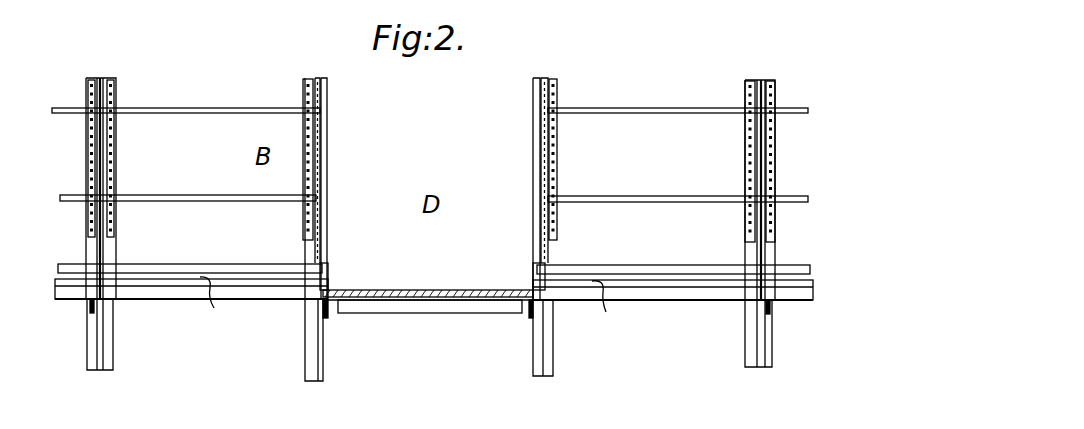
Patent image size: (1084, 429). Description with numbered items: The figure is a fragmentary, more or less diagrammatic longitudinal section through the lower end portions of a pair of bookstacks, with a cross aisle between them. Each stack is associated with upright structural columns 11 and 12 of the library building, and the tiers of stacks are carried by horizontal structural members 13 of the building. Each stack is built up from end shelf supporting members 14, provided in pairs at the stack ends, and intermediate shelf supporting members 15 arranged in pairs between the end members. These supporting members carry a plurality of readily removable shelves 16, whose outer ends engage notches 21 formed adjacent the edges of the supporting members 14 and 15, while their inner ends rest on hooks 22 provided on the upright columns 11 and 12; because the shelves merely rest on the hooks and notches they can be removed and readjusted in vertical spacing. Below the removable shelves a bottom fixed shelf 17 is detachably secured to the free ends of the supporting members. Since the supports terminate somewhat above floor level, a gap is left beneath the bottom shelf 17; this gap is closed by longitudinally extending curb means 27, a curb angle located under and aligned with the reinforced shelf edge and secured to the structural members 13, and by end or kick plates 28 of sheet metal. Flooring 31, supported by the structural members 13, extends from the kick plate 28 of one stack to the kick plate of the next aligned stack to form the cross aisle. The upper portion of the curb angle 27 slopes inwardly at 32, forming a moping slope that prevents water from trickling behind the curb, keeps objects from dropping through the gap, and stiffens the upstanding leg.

The structural column 11 is at (308, 343).
The structural column 12 is at (108, 347).
The horizontal structural member 13 is at (93, 303).
The end shelf supporting member 14 is at (325, 152).
The intermediate shelf supporting member 15 is at (118, 150).
The removable shelf 16 is at (193, 195).
The bottom fixed shelf 17 is at (258, 242).
The notch 21 is at (318, 130).
The hook 22 is at (116, 212).
The curb means 27 is at (185, 298).
The end plate 28 is at (324, 272).
The flooring 31 is at (442, 281).
The moping slope 32 is at (414, 306).